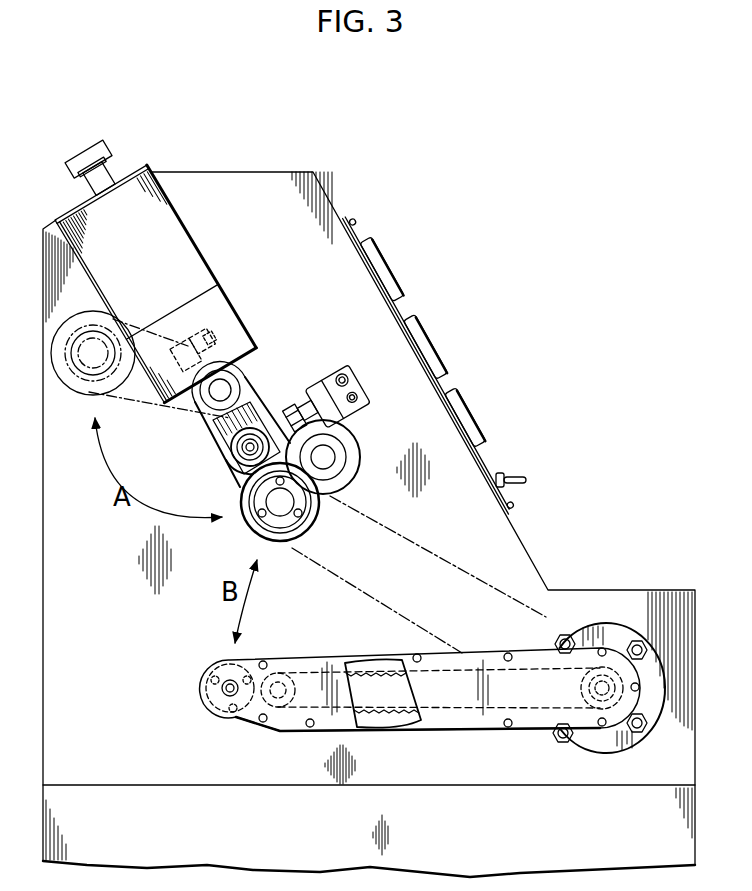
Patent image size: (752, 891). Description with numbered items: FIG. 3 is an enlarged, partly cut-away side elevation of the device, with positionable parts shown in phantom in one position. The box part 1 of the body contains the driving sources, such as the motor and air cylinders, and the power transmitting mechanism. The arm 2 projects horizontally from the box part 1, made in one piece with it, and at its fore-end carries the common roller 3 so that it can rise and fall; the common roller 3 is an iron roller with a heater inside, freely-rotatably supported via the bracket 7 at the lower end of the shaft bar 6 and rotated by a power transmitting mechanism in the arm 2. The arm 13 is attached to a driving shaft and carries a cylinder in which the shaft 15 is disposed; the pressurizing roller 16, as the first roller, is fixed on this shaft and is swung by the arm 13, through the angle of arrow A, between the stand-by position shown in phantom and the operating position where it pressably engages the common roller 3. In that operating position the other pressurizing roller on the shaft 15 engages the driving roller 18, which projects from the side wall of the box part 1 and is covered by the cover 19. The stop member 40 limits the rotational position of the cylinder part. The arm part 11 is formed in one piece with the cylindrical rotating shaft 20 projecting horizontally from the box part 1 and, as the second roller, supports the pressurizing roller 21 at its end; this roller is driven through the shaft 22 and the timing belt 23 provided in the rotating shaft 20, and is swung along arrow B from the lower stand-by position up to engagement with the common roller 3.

The box part of the body 1 is at (238, 172).
The arm 2 is at (180, 238).
The common roller 3 is at (216, 440).
The shaft bar 6 is at (247, 375).
The bracket 7 is at (262, 402).
The arm part 11 is at (441, 556).
The arm 13 is at (181, 337).
The shaft 15 is at (243, 535).
The pressurizing roller 16 is at (80, 396).
The driving roller 18 is at (352, 445).
The cover 19 is at (350, 472).
The cylindrical rotating shaft 20 is at (620, 623).
The pressurizing roller 21 is at (202, 688).
The shaft 22 is at (618, 681).
The timing belt 23 is at (388, 724).
The stop member 40 is at (313, 390).